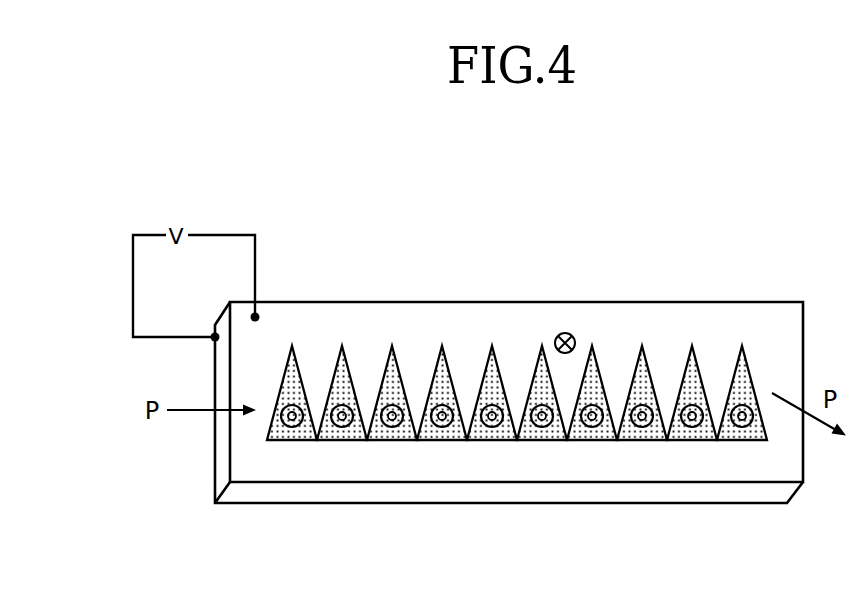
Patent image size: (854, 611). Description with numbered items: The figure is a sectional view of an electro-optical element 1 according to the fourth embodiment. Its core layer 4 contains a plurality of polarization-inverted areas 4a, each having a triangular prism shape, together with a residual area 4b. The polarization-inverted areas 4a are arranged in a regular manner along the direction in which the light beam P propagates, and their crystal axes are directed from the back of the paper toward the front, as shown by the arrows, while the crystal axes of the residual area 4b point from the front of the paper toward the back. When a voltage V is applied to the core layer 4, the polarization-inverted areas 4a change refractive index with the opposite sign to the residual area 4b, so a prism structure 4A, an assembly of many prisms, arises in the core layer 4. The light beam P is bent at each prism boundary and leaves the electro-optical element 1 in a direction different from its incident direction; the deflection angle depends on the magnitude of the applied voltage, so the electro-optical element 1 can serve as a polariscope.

The electro-optical element 1 is at (442, 256).
The core layer 4 is at (451, 312).
The prism structure 4A is at (665, 338).
The polarization-inverted area 4a is at (292, 382).
The residual area 4b is at (588, 322).